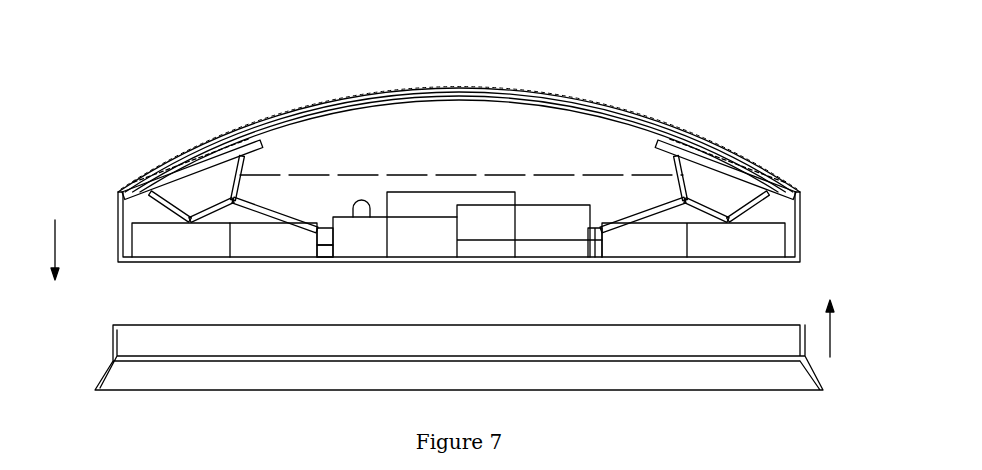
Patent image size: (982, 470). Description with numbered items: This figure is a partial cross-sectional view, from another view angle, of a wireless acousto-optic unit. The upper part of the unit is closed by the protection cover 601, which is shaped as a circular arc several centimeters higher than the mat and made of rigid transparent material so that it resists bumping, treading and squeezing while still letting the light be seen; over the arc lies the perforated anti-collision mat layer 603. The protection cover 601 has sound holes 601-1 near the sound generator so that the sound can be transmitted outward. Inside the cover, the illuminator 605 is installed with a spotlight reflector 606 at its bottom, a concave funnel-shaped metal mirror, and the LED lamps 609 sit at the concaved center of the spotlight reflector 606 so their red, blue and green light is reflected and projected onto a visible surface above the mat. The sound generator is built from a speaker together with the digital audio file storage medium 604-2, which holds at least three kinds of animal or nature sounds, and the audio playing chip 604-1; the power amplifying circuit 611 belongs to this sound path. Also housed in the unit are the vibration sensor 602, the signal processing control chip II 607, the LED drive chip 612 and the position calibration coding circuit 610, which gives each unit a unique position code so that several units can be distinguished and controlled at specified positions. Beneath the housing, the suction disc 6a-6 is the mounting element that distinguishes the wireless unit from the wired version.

The protection cover 601 is at (497, 100).
The perforated anti-collision mat layer 603 is at (462, 92).
The sound holes 601-1 is at (143, 175).
The spotlight reflector 606 is at (236, 200).
The LED lamps 609 is at (363, 201).
The power amplifying circuit 611 is at (330, 231).
The LED drive chip 612 is at (483, 193).
The illuminator 605 is at (550, 205).
The signal processing control chip II 607 is at (580, 214).
The audio playing chip 604-1 is at (265, 238).
The digital audio file storage medium 604-2 is at (150, 238).
The vibration sensor 602 is at (317, 253).
The position calibration coding circuit 610 is at (368, 250).
The suction disc 6a-6 is at (813, 370).